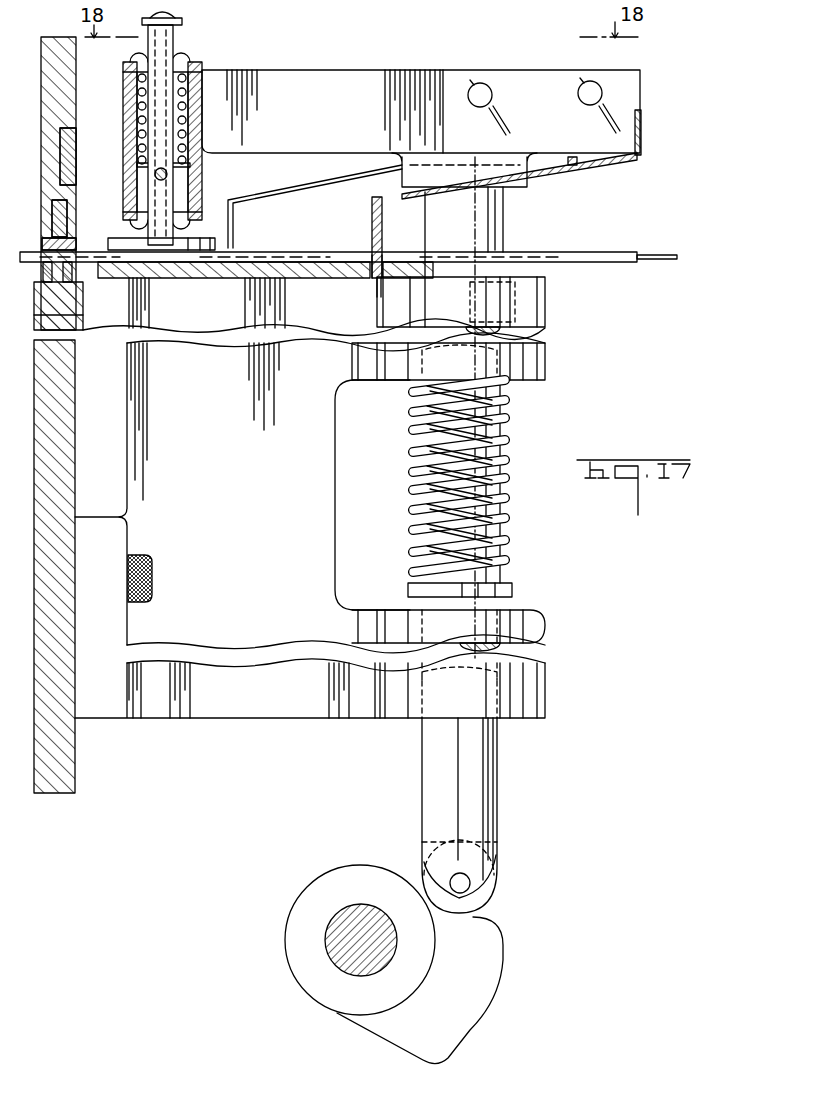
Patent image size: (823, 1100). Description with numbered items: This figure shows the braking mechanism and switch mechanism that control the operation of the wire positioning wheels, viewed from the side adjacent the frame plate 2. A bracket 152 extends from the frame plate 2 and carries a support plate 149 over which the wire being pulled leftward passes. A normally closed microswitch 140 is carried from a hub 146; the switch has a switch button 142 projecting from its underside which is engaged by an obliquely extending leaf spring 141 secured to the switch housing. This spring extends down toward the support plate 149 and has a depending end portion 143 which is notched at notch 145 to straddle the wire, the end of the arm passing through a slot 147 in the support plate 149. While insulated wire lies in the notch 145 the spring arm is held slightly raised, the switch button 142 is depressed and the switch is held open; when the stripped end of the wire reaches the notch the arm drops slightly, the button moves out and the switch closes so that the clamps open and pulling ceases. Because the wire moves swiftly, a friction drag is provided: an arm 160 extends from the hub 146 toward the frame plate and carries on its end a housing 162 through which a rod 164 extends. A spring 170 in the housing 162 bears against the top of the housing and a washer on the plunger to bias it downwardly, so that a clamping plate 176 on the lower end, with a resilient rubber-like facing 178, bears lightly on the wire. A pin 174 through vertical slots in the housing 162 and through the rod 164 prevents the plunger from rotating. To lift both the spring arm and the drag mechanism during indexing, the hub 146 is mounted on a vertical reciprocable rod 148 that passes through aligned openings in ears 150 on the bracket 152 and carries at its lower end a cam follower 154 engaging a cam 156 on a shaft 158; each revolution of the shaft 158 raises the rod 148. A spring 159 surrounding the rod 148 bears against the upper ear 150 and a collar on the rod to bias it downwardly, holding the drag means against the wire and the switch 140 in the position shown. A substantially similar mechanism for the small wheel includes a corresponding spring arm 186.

The frame plate 2 is at (63, 750).
The microswitch 140 is at (625, 96).
The leaf spring 141 is at (593, 166).
The switch button 142 is at (573, 165).
The depending end portion 143 is at (380, 240).
The notch 145 is at (377, 284).
The hub 146 is at (529, 186).
The slot 147 is at (372, 262).
The reciprocable rod 148 is at (500, 238).
The support plate 149 is at (320, 277).
The ears 150 is at (545, 305).
The bracket 152 is at (240, 710).
The cam follower 154 is at (495, 893).
The cam 156 is at (478, 998).
The shaft 158 is at (358, 942).
The spring 159 is at (506, 560).
The arm 160 is at (307, 77).
The housing 162 is at (200, 92).
The rod 164 is at (155, 100).
The spring 170 is at (142, 143).
The pin 174 is at (168, 173).
The clamping plate 176 is at (210, 240).
The resilient facing 178 is at (172, 250).
The spring arm 186 is at (326, 188).